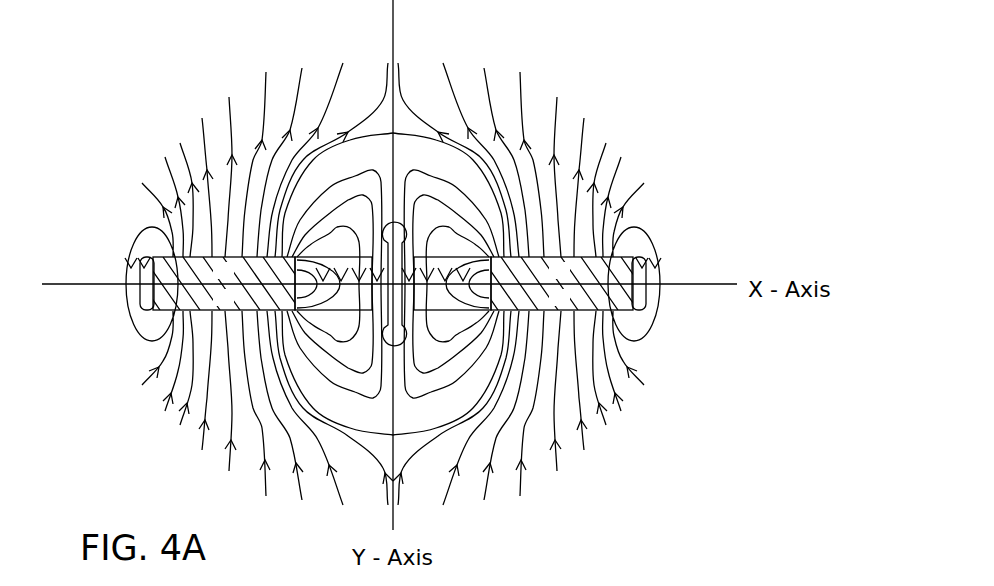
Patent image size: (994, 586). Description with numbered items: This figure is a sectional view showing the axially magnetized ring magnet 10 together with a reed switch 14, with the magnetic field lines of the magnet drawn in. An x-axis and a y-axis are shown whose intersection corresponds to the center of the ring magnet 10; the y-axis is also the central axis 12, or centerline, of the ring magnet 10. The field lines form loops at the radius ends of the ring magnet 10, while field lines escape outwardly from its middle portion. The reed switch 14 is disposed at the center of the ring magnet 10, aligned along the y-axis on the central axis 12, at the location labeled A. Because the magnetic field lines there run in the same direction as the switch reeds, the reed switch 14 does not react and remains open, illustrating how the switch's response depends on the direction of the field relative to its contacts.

The ring magnet 10 is at (76, 207).
The central axis 12 is at (394, 35).
The reed switch 14 is at (402, 235).